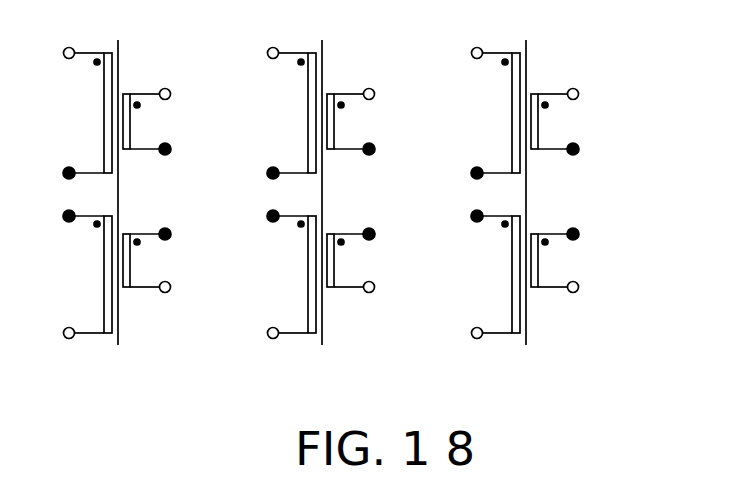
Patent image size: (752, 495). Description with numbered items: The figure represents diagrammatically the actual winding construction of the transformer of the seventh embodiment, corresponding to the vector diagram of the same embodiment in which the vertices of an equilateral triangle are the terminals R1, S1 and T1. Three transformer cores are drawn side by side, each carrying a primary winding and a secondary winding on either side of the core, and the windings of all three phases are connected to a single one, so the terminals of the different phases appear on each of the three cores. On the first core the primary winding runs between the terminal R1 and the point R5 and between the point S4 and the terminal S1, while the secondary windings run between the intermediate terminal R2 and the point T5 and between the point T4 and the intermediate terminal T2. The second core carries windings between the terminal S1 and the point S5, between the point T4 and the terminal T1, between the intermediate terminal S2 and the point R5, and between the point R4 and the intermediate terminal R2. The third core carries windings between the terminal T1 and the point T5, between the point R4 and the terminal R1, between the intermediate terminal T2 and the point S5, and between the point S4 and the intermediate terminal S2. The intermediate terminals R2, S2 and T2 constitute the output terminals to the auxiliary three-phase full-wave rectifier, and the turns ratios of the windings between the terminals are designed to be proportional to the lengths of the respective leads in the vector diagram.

The R-phase primary winding terminal R1 is at (285, 198).
The R-phase intermediate terminal R2 is at (256, 194).
The R-phase winding point X4 R4 is at (423, 229).
The R-phase winding point X5 R5 is at (220, 164).
The S-phase primary winding terminal S1 is at (183, 198).
The S-phase intermediate terminal S2 is at (459, 194).
The S-phase winding point X4 S4 is at (320, 229).
The S-phase winding point X5 S5 is at (423, 164).
The T-phase primary winding terminal T1 is at (386, 198).
The T-phase intermediate terminal T2 is at (357, 194).
The T-phase winding point X4 T4 is at (219, 229).
The T-phase winding point X5 T5 is at (321, 164).